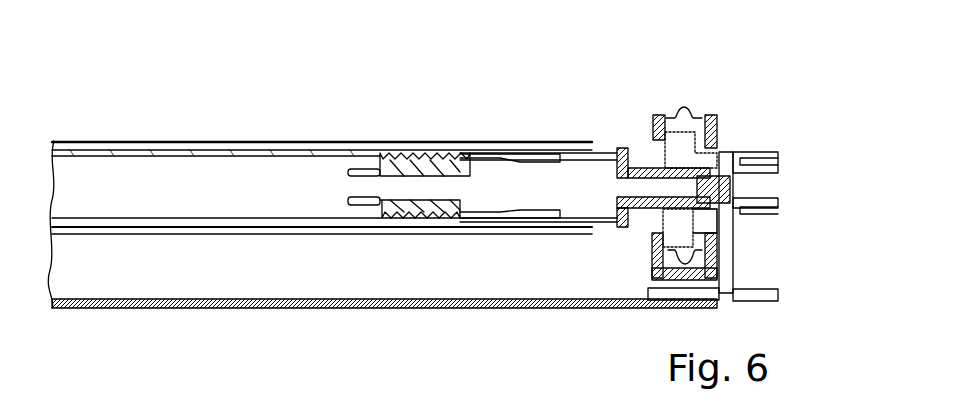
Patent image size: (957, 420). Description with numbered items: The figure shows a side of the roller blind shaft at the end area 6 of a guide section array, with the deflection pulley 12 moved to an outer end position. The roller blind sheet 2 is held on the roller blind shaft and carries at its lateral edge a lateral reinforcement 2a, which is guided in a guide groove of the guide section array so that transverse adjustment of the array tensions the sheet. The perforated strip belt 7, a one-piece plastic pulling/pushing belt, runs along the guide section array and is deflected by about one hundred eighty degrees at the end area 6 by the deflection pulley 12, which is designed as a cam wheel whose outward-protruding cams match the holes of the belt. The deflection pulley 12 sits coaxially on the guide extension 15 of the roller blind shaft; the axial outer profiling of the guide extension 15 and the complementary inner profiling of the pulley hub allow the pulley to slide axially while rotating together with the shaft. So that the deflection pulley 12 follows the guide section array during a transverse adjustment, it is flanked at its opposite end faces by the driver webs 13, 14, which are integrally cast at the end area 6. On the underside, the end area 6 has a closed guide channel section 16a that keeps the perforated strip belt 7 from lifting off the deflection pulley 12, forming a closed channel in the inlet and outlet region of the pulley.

The roller blind sheet 2 is at (295, 142).
The lateral reinforcement 2a is at (535, 129).
The end area 6 is at (776, 236).
The perforated strip belt 7 is at (652, 270).
The deflection pulley 12 is at (703, 148).
The driver web 13 is at (731, 88).
The driver web 14 is at (717, 122).
The guide extension 15 is at (620, 180).
The guide channel section 16a is at (690, 210).